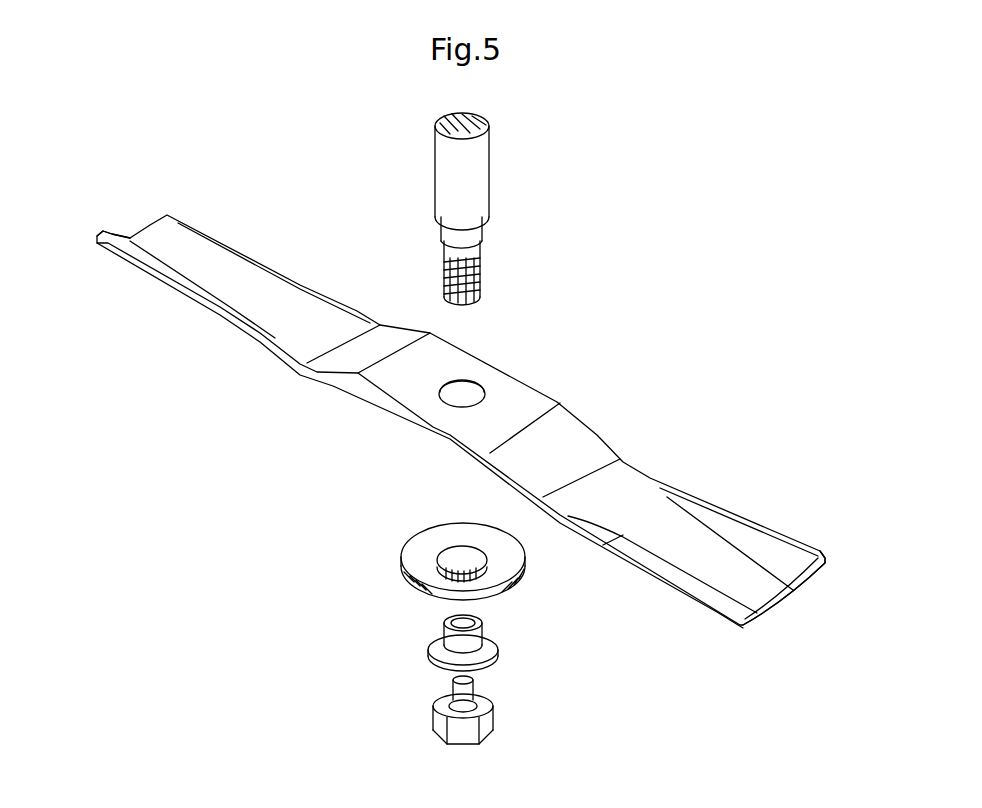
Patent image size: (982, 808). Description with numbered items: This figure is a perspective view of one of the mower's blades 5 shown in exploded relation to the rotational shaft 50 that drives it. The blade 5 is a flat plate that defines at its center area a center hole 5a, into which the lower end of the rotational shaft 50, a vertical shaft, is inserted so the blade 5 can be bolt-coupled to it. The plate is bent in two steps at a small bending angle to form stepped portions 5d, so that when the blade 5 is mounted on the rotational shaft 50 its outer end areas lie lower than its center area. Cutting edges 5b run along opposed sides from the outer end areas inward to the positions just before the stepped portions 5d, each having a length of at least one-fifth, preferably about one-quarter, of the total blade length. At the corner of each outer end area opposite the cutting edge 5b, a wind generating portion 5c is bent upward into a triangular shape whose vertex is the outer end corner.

The blade 5 is at (461, 403).
The center hole 5a is at (465, 380).
The cutting edge 5b is at (250, 257).
The wind generating portion 5c is at (133, 240).
The stepped portion 5d is at (597, 427).
The rotational shaft 50 is at (490, 188).